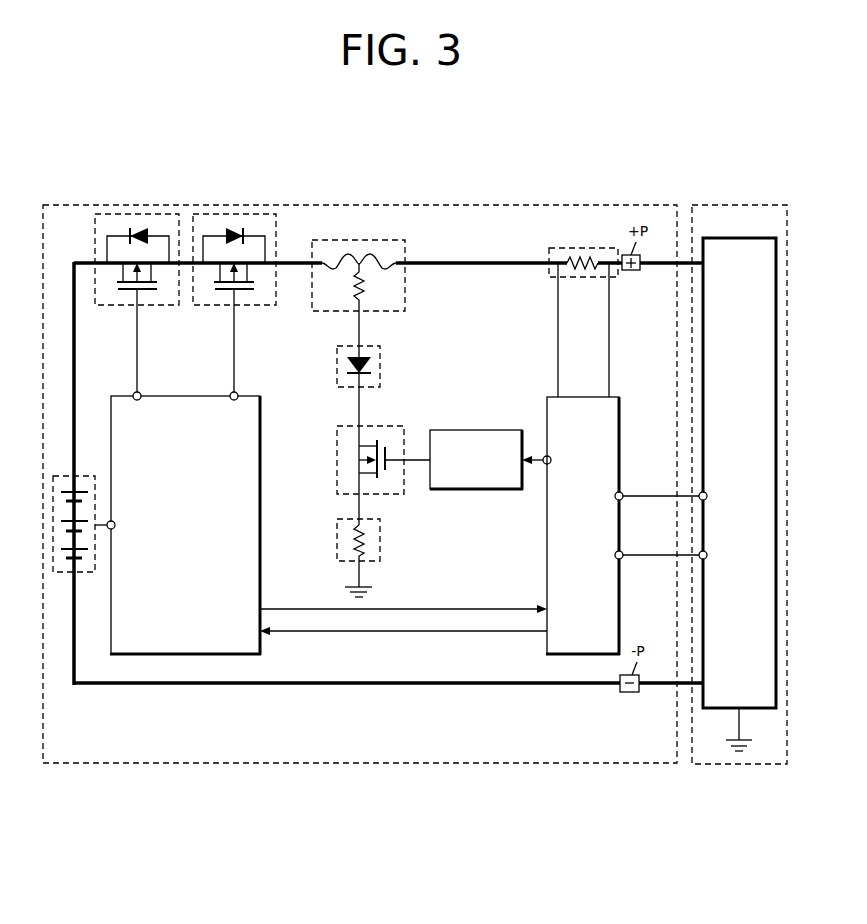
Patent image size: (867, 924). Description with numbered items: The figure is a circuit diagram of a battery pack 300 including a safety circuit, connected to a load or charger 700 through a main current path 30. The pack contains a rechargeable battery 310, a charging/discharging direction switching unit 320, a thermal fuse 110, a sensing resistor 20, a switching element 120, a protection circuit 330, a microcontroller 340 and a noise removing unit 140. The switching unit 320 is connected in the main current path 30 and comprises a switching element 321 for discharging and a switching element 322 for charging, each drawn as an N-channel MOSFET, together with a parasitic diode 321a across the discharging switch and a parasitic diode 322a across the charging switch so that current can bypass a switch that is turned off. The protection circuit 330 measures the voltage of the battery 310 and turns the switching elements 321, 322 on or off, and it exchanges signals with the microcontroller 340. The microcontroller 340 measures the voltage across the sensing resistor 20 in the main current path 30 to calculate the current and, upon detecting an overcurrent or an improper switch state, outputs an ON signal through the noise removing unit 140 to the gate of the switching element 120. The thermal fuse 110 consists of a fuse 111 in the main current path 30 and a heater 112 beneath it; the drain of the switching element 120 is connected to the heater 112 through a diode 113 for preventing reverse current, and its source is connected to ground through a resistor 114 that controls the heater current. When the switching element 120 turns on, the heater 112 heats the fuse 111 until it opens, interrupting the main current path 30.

The battery pack 300 is at (555, 196).
The load or charger 700 is at (739, 205).
The main current path 30 is at (480, 262).
The charging/discharging direction switching unit 320 is at (137, 176).
The switching element for discharging 321 is at (117, 283).
The parasitic or internal diode 321a is at (130, 236).
The switching element for charging 322 is at (255, 283).
The parasitic or internal diode 322a is at (243, 236).
The thermal fuse 110 is at (341, 267).
The fuse 111 is at (326, 266).
The heater 112 is at (352, 290).
The diode for preventing reverse current 113 is at (380, 366).
The resistor 114 is at (337, 539).
The switching element 120 is at (337, 456).
The noise removing unit 140 is at (475, 429).
The sensing resistor 20 is at (583, 248).
The rechargeable battery 310 is at (63, 476).
The protection circuit 330 is at (184, 396).
The microcontroller 340 is at (583, 397).